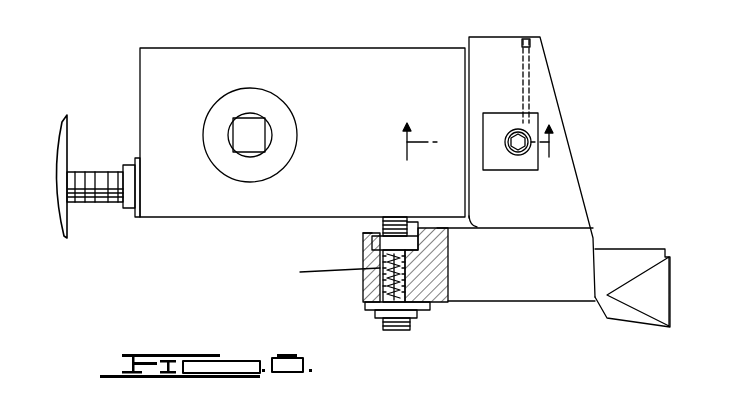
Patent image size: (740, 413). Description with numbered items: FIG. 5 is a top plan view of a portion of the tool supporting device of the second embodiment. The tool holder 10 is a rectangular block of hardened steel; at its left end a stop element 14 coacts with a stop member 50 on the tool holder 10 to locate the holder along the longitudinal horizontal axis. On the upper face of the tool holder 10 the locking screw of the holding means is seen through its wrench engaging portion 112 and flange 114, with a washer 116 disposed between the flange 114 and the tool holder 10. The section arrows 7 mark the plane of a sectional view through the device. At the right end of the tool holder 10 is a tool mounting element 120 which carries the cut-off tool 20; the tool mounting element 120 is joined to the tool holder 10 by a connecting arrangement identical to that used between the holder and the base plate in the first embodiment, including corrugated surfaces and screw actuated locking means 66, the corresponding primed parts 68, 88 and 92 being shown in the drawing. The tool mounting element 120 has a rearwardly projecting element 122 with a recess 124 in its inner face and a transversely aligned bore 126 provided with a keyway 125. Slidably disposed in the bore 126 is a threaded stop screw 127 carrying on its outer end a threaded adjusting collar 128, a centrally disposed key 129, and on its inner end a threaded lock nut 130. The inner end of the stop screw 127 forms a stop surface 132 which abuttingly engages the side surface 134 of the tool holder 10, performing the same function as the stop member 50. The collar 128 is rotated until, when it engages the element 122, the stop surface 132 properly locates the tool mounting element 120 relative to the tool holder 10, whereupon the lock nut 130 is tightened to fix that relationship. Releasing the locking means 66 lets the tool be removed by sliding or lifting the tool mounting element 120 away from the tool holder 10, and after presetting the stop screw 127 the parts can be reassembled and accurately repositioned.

The tool holder 10 is at (367, 52).
The stop element 14 is at (62, 122).
The stop member 50 is at (117, 164).
The wrench engaging portion 112 is at (255, 152).
The flange 114 is at (252, 118).
The washer 116 is at (290, 120).
The section line 7- 7 is at (471, 147).
The tool mounting element 120 is at (577, 197).
The rod 88 is at (531, 80).
The pin 92 is at (530, 45).
The locking means 66 is at (545, 115).
The screw 68 is at (510, 168).
The rearwardly projecting element 122 is at (441, 302).
The side surface 134 is at (367, 222).
The stop surface 132 is at (393, 217).
The lock nut 130 is at (425, 222).
The recess 124 is at (372, 244).
The bore 126 is at (380, 262).
The stop screw 127 is at (390, 280).
The key 129 is at (328, 272).
The keyway 125 is at (365, 304).
The adjusting collar 128 is at (378, 314).
The cut-off tool 20 is at (650, 285).